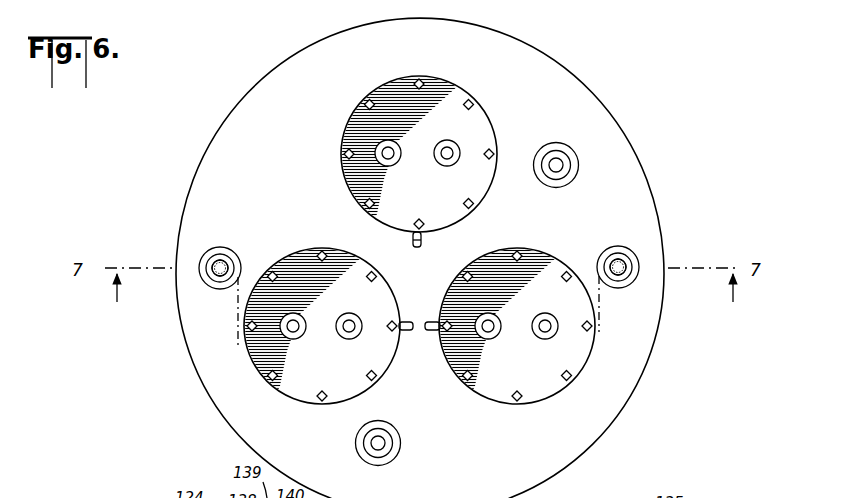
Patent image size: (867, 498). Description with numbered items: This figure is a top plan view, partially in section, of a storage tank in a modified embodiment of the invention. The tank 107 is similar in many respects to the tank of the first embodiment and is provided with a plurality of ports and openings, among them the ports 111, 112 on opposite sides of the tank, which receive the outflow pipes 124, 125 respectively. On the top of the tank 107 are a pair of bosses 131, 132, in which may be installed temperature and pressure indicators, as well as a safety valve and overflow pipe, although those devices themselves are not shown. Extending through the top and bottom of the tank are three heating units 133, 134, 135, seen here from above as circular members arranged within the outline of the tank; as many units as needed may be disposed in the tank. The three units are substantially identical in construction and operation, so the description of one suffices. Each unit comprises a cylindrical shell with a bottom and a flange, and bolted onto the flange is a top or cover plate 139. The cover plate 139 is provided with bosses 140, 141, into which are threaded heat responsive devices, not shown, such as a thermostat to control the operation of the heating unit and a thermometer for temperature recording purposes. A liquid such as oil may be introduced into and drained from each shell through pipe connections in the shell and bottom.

The tank 107 is at (222, 117).
The port 111 is at (216, 267).
The port 112 is at (622, 262).
The outflow pipe 124 is at (228, 267).
The outflow pipe 125 is at (612, 265).
The boss 131 is at (388, 438).
The boss 132 is at (555, 160).
The heating unit 133 is at (317, 316).
The heating unit 134 is at (583, 376).
The heating unit 135 is at (346, 107).
The cover plate 139 is at (297, 262).
The boss 140 is at (299, 331).
The boss 141 is at (349, 320).